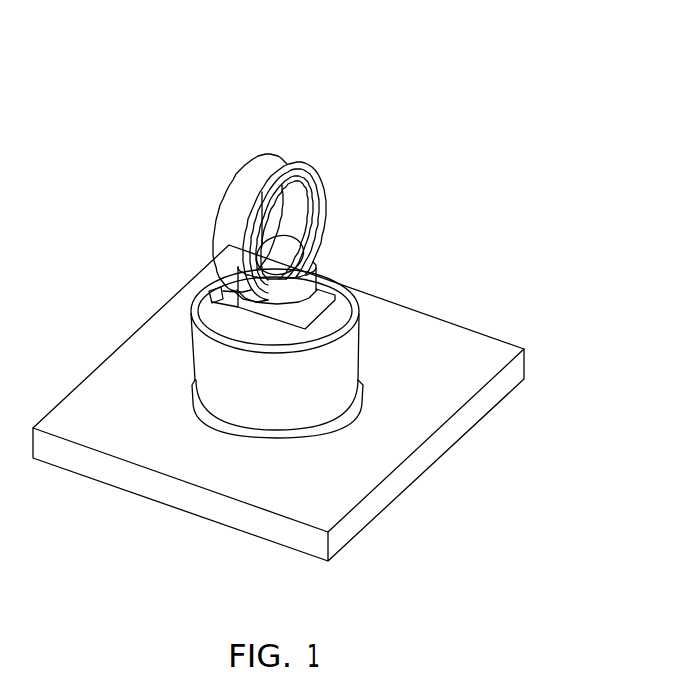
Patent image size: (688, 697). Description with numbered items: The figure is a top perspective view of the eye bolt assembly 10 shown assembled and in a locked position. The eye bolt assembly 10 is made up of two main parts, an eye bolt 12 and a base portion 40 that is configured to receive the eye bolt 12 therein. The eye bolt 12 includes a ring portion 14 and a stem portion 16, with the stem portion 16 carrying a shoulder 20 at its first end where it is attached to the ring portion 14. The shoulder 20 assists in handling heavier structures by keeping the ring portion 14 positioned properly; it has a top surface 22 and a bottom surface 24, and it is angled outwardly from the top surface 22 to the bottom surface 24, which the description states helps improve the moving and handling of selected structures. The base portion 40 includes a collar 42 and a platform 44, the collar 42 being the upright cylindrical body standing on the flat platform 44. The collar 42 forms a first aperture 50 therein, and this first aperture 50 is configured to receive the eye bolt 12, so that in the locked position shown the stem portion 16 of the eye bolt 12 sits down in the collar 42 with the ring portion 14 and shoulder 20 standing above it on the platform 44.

The eye bolt assembly 10 is at (446, 64).
The eye bolt 12 is at (311, 195).
The ring portion 14 is at (334, 177).
The stem portion 16 is at (320, 248).
The shoulder 20 is at (318, 276).
The top surface 22 is at (285, 262).
The bottom surface 24 is at (297, 316).
The base portion 40 is at (283, 400).
The collar 42 is at (306, 343).
The platform 44 is at (453, 473).
The first aperture 50 is at (214, 293).